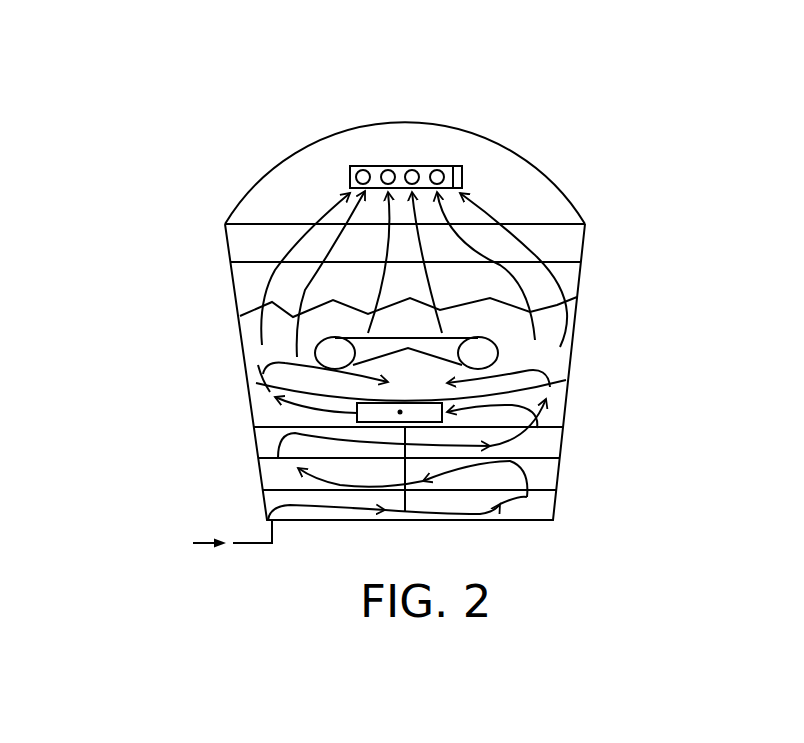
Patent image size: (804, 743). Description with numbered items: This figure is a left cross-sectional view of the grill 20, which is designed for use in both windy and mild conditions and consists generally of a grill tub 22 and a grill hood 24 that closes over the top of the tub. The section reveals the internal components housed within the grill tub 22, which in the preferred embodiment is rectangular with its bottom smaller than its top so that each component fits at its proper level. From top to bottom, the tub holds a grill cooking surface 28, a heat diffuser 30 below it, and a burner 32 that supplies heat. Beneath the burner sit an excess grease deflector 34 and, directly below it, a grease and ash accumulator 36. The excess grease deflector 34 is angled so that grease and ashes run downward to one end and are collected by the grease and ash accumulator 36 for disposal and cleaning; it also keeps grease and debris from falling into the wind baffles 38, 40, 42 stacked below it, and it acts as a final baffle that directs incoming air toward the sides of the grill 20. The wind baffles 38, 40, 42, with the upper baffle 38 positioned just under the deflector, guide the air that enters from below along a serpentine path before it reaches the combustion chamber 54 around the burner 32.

The grill 20 is at (502, 127).
The grill tub 22 is at (240, 336).
The grill hood 24 is at (307, 146).
The grill cooking surface 28 is at (572, 262).
The heat diffuser 30 is at (572, 300).
The burner 32 is at (500, 354).
The excess grease deflector 34 is at (566, 374).
The grease and ash accumulator 36 is at (357, 421).
The upper baffle 38 is at (558, 421).
The wind baffle 40 is at (546, 479).
The wind baffle 42 is at (280, 489).
The combustion chamber 54 is at (258, 365).